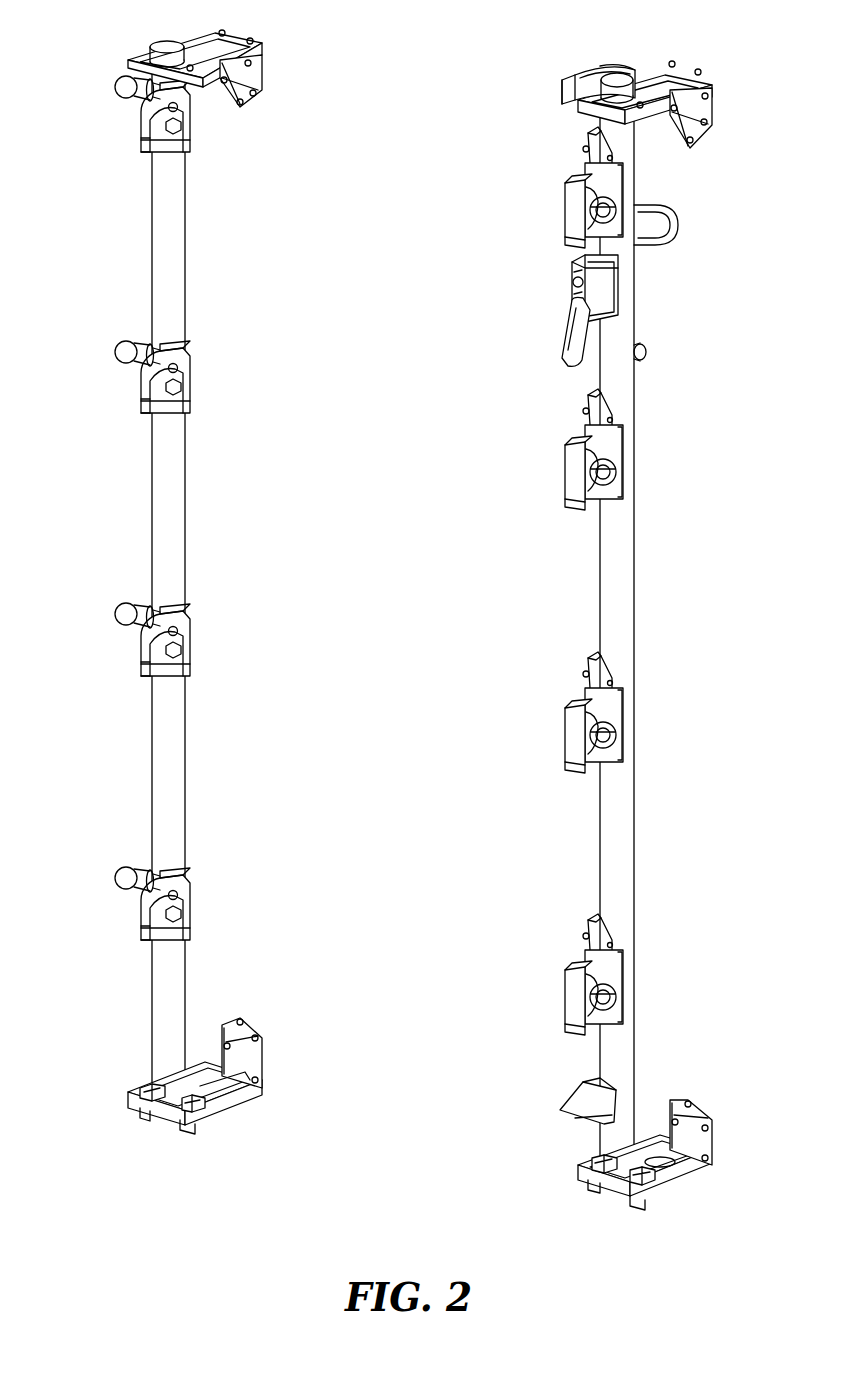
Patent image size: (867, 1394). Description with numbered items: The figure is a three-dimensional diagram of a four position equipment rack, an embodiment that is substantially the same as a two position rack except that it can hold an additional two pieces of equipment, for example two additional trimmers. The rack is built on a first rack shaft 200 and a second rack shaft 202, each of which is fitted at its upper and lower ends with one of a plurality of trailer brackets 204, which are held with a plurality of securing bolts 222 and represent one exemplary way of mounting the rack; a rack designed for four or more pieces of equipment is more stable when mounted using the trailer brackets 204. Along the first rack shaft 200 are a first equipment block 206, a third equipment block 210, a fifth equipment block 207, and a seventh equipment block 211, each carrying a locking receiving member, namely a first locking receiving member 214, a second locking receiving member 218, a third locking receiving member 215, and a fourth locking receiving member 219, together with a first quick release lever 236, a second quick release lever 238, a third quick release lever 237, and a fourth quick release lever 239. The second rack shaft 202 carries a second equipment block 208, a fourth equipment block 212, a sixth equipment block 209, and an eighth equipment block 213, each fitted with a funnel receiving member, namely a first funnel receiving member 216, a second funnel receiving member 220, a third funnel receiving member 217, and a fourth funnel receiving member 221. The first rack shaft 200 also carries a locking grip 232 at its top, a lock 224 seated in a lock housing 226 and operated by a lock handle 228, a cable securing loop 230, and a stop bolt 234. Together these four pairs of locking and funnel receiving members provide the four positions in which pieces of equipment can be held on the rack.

The first rack shaft 200 is at (634, 505).
The second rack shaft 202 is at (170, 505).
The trailer brackets 204 is at (205, 45).
The first equipment block 206 is at (575, 988).
The fifth equipment block 207 is at (575, 460).
The second equipment block 208 is at (190, 910).
The sixth equipment block 209 is at (190, 386).
The third equipment block 210 is at (575, 727).
The seventh equipment block 211 is at (575, 198).
The fourth equipment block 212 is at (190, 648).
The eighth equipment block 213 is at (185, 120).
The first locking receiving member 214 is at (615, 962).
The third locking receiving member 215 is at (615, 437).
The first funnel receiving member 216 is at (120, 872).
The third funnel receiving member 217 is at (120, 346).
The second locking receiving member 218 is at (615, 699).
The fourth locking receiving member 219 is at (615, 172).
The second funnel receiving member 220 is at (120, 608).
The fourth funnel receiving member 221 is at (120, 82).
The securing bolts 222 is at (182, 1100).
The lock 224 is at (572, 270).
The lock housing 226 is at (612, 285).
The lock handle 228 is at (568, 332).
The cable securing loop 230 is at (655, 226).
The locking grip 232 is at (575, 75).
The stop bolt 234 is at (646, 352).
The first quick release lever 236 is at (588, 928).
The third quick release lever 237 is at (588, 404).
The second quick release lever 238 is at (588, 668).
The fourth quick release lever 239 is at (588, 142).